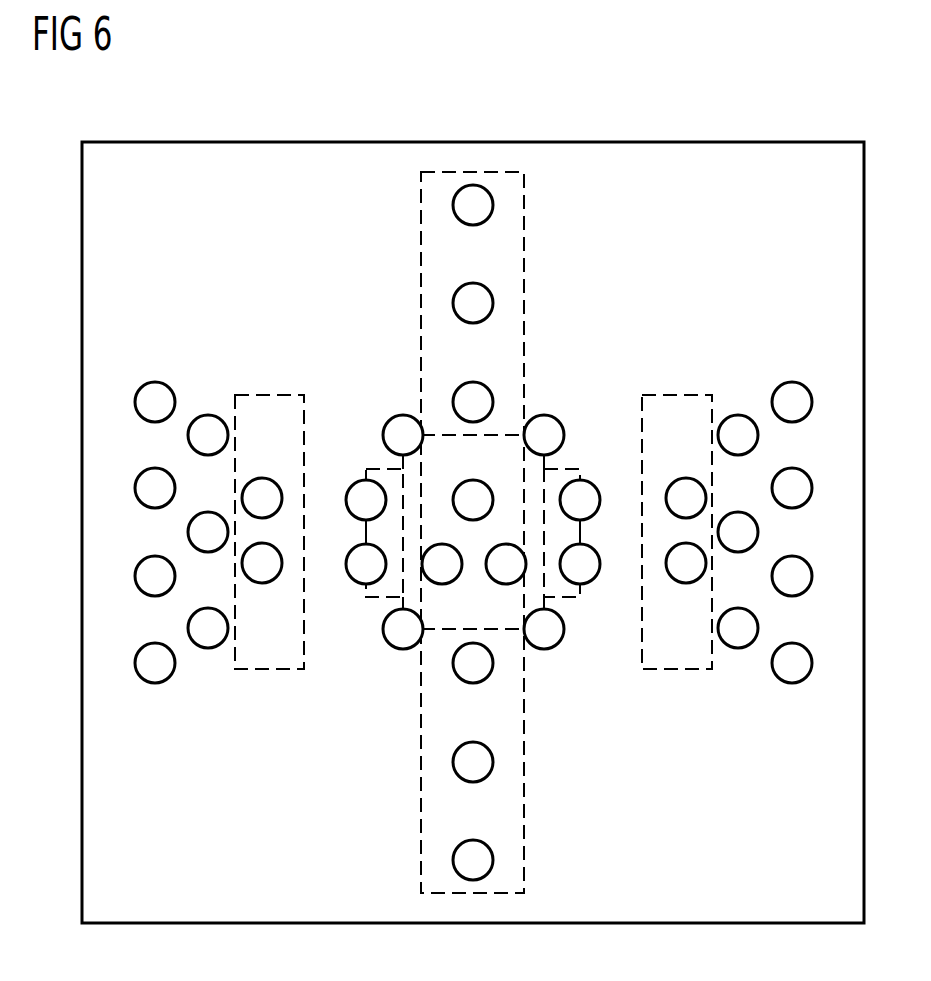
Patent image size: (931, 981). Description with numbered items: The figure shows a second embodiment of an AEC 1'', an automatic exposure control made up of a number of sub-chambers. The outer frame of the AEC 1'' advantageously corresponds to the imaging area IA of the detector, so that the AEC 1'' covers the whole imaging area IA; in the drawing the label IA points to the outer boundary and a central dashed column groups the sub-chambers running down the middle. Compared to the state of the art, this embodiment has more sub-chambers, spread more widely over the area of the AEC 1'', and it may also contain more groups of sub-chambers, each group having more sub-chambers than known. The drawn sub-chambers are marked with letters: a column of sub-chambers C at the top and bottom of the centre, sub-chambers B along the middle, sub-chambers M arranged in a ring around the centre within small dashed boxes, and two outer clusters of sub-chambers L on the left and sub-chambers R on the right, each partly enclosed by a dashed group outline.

The AEC 1'' is at (447, 501).
The imaging area IA is at (473, 142).
The left loudspeaker L is at (219, 532).
The right loudspeaker R is at (727, 532).
The center loudspeaker C is at (473, 532).
The bass loudspeaker B is at (474, 532).
The middle loudspeaker M is at (473, 532).